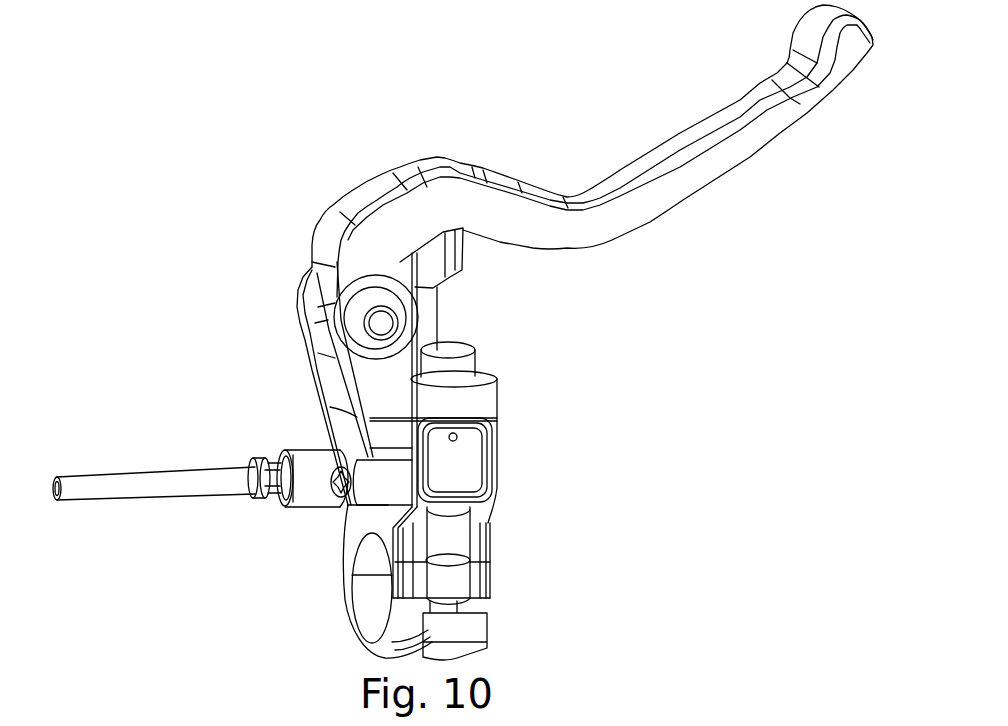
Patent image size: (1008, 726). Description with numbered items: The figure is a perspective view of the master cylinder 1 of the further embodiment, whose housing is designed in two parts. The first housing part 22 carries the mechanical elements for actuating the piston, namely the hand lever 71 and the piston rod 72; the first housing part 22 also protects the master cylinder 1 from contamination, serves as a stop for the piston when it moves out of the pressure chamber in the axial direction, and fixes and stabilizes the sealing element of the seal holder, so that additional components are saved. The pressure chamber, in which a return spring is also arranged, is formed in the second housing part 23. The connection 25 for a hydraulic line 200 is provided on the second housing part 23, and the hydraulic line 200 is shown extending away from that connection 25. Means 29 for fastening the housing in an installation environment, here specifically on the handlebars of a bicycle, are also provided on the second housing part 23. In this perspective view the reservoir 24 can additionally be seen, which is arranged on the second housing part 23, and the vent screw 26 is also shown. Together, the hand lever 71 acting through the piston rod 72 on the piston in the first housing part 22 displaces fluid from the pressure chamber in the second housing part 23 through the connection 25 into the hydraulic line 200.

The master cylinder 1 is at (620, 485).
The first housing part 22 is at (497, 378).
The second housing part 23 is at (493, 563).
The reservoir 24 is at (477, 467).
The connection 25 is at (308, 450).
The vent screw 26 is at (350, 507).
The means for fastening 29 is at (341, 630).
The hand lever 71 is at (690, 127).
The piston rod 72 is at (435, 322).
The hydraulic line 200 is at (122, 470).